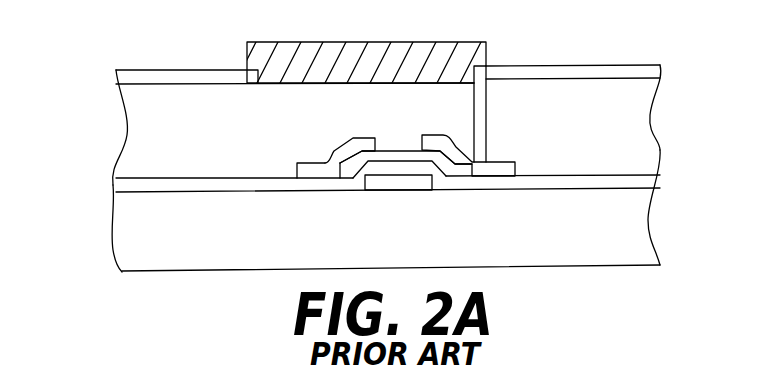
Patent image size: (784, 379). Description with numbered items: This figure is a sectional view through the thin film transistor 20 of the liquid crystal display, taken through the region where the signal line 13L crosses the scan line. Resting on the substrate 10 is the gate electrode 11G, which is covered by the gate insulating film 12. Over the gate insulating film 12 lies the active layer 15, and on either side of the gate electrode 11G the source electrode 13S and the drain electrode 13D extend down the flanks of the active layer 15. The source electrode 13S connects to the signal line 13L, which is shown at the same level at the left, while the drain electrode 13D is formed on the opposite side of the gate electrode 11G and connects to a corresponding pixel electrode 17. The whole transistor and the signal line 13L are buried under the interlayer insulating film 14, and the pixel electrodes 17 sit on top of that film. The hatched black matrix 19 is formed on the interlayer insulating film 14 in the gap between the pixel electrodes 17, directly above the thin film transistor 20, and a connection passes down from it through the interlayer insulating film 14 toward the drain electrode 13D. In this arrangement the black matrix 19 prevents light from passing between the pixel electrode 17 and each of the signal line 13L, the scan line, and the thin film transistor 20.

The substrate 10 is at (638, 228).
The gate electrode 11G is at (400, 183).
The gate insulating film 12 is at (647, 180).
The drain electrode 13D is at (475, 169).
The signal line 13L is at (318, 172).
The source electrode 13S is at (342, 146).
The interlayer insulating film 14 is at (127, 143).
The active layer 15 is at (393, 152).
The pixel electrode 17 is at (188, 78).
The black matrix 19 is at (481, 56).
The thin film transistor 20 is at (280, 142).